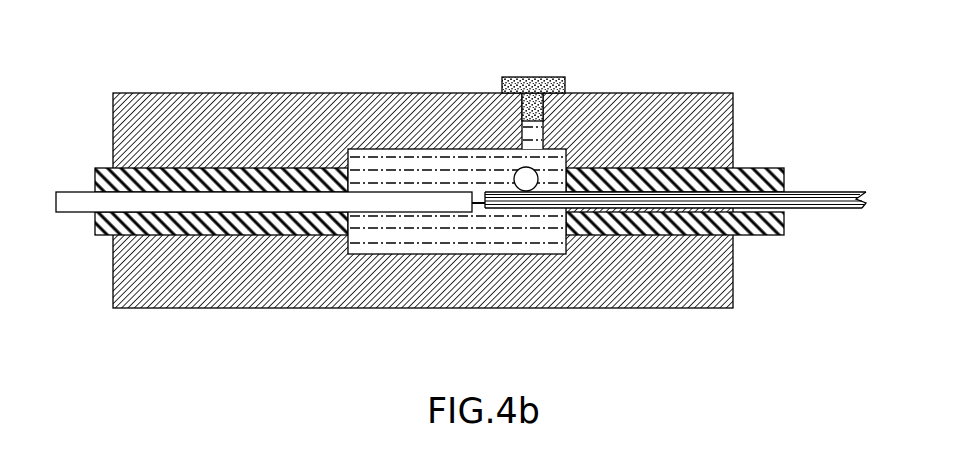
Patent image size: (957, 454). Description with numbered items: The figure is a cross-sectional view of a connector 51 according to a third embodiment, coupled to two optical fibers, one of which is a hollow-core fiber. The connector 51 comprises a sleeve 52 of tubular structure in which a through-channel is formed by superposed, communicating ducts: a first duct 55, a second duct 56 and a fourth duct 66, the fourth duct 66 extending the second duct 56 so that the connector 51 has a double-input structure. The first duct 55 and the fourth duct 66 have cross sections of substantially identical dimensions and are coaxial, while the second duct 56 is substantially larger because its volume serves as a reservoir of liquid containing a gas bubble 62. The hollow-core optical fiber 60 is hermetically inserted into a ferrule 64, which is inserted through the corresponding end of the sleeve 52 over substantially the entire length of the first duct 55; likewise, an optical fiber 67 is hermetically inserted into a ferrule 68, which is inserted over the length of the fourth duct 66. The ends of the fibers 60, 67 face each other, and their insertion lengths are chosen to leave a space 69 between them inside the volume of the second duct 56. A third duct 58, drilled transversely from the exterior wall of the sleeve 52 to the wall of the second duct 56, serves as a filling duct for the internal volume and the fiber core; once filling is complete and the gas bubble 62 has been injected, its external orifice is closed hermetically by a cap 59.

The connector 51 is at (742, 76).
The sleeve 52 is at (231, 93).
The first duct 55 is at (648, 236).
The second duct 56 is at (522, 254).
The third duct 58 is at (548, 121).
The cap 59 is at (538, 77).
The hollow-core optical fiber 60 is at (793, 191).
The gas bubble 62 is at (524, 176).
The ferrule 64 is at (698, 187).
The fourth duct 66 is at (221, 236).
The optical fiber 67 is at (77, 190).
The ferrule 68 is at (307, 236).
The space 69 is at (474, 213).